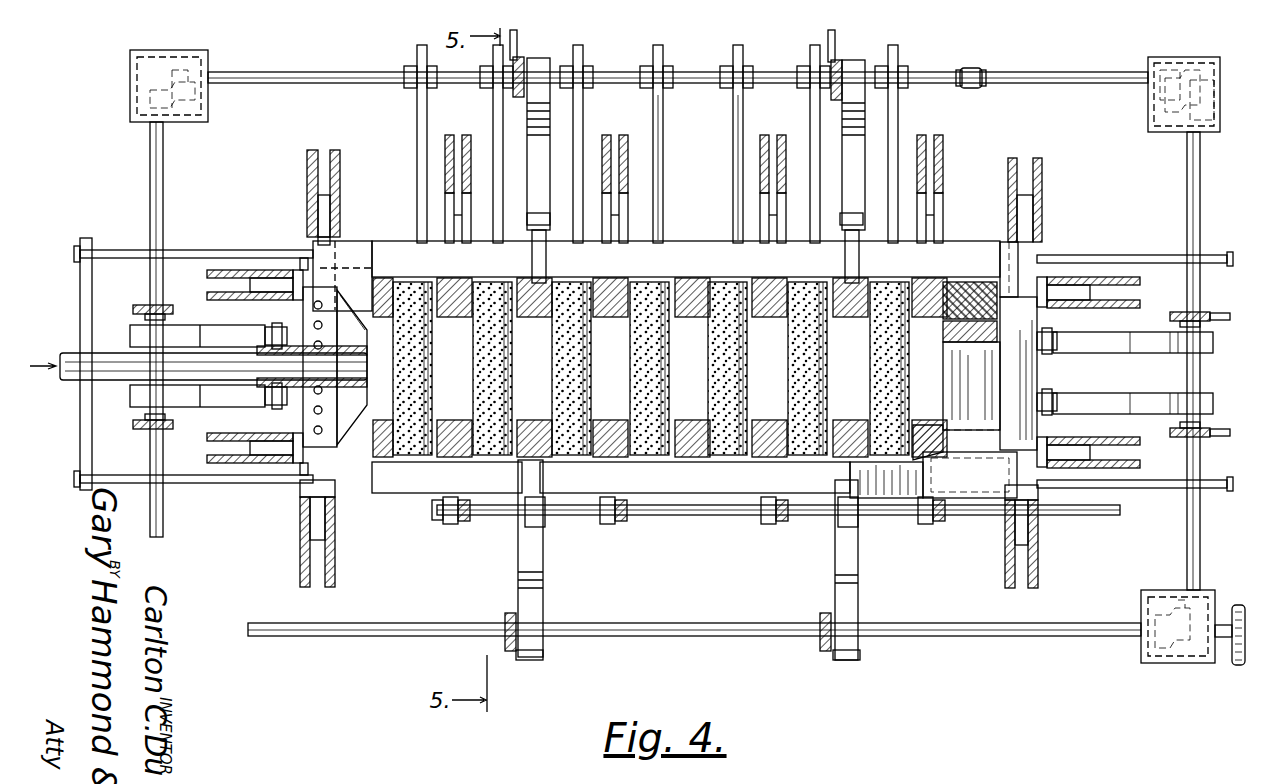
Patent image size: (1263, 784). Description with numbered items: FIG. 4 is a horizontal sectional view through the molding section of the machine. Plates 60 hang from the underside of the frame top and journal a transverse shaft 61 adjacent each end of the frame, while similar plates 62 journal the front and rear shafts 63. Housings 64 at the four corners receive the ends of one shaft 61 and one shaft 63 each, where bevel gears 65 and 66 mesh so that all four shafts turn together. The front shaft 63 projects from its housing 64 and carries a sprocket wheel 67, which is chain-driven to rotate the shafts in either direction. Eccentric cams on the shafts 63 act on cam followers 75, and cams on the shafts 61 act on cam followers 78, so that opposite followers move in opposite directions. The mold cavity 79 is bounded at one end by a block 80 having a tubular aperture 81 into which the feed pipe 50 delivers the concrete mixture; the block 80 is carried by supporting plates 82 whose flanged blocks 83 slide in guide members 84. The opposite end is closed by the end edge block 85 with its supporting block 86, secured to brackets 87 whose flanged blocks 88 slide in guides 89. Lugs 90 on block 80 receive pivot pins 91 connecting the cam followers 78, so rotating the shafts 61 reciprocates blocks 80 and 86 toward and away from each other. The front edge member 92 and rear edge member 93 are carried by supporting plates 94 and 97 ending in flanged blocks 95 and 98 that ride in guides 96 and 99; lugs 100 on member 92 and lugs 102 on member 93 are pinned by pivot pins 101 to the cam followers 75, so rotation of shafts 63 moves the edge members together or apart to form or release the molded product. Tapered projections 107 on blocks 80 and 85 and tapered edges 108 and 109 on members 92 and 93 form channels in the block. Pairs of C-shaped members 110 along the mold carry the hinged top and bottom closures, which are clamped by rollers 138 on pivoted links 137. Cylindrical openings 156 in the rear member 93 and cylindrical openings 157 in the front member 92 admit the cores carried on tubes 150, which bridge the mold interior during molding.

The feed pipe 50 is at (115, 355).
The plates 60 is at (140, 304).
The shaft 61 is at (165, 225).
The plates 62 is at (524, 66).
The shafts 63 is at (696, 92).
The housings 64 is at (1165, 65).
The bevel gears 65 is at (1215, 85).
The bevel gears 66 is at (1150, 70).
The sprocket wheel 67 is at (1238, 608).
The cam followers 75 is at (550, 158).
The cam followers 78 is at (192, 335).
The mold cavity 79 is at (703, 262).
The block 80 is at (343, 262).
The tubular aperture 81 is at (360, 378).
The supporting plates 82 is at (296, 262).
The flanged blocks 83 is at (245, 268).
The supporting guide members 84 is at (212, 268).
The end edge defining block 85 is at (974, 356).
The supporting block 86 is at (1040, 320).
The supporting brackets 87 is at (1050, 280).
The flanged blocks 88 is at (1095, 276).
The guides 89 is at (1120, 275).
The lugs 90 is at (300, 325).
The pivot pins 91 is at (255, 365).
The front edge member 92 is at (688, 516).
The rear edge member 93 is at (666, 243).
The supporting plates 94 is at (300, 500).
The flanged blocks 95 is at (336, 528).
The guides 96 is at (336, 570).
The supporting plates 97 is at (315, 215).
The flanged blocks 98 is at (330, 200).
The guides 99 is at (342, 165).
The lugs 100 is at (545, 482).
The pivot pins 101 is at (520, 518).
The lugs 102 is at (536, 270).
The tapered projections 107 is at (358, 415).
The tapered edges 108 is at (932, 425).
The tapered edges 109 is at (360, 340).
The C-shaped members 110 is at (945, 165).
The links 137 is at (455, 526).
The roller 138 is at (760, 525).
The tubes 150 is at (725, 62).
The cylindrical openings 156 is at (448, 285).
The cylindrical openings 157 is at (445, 420).